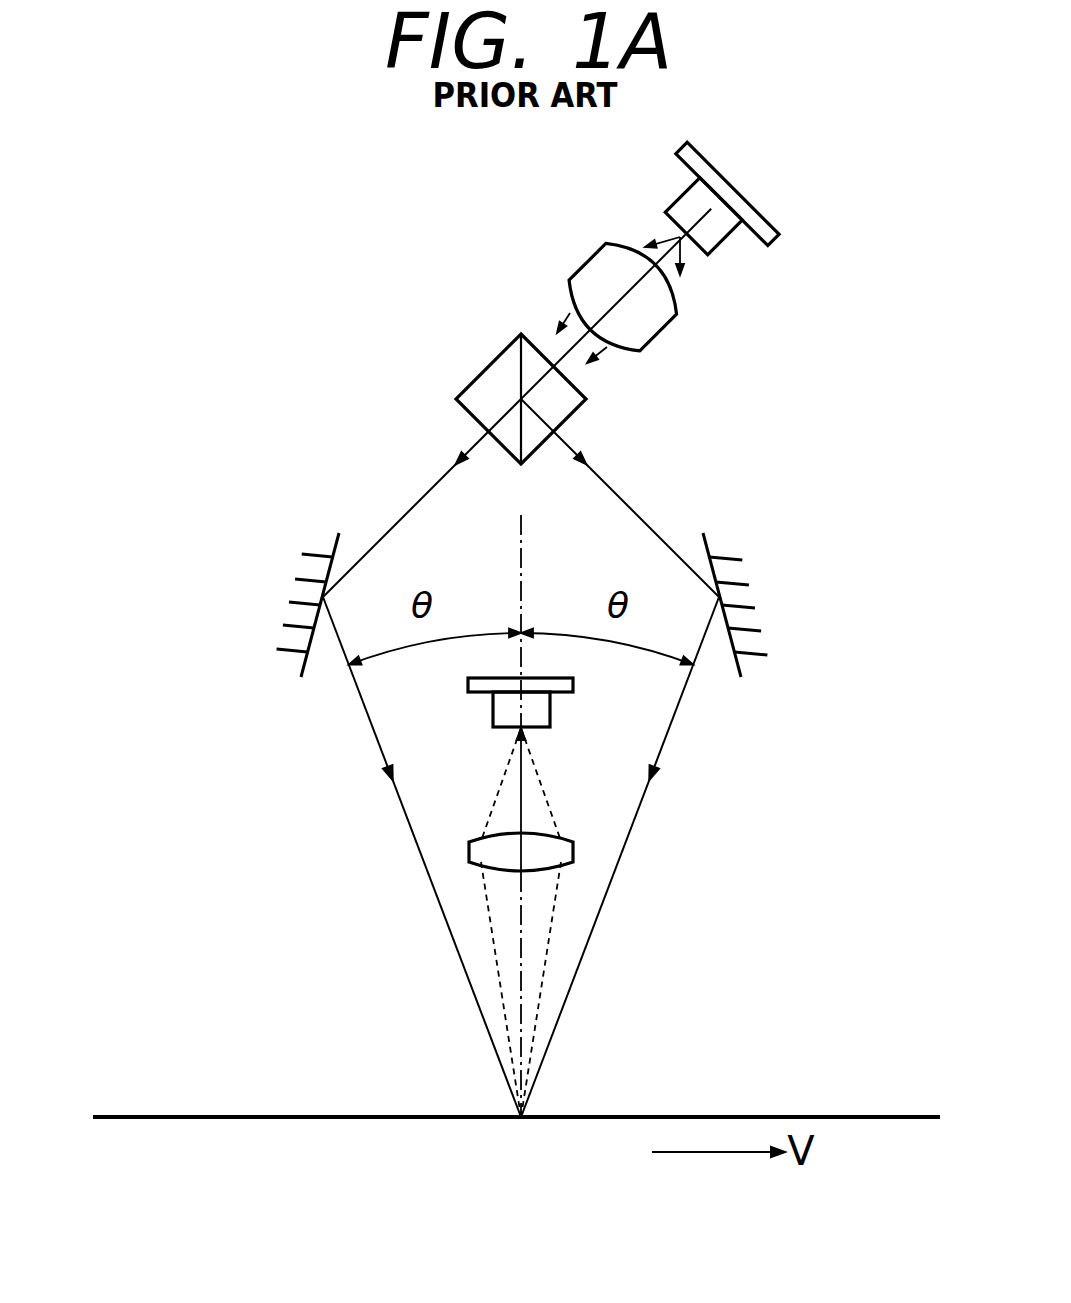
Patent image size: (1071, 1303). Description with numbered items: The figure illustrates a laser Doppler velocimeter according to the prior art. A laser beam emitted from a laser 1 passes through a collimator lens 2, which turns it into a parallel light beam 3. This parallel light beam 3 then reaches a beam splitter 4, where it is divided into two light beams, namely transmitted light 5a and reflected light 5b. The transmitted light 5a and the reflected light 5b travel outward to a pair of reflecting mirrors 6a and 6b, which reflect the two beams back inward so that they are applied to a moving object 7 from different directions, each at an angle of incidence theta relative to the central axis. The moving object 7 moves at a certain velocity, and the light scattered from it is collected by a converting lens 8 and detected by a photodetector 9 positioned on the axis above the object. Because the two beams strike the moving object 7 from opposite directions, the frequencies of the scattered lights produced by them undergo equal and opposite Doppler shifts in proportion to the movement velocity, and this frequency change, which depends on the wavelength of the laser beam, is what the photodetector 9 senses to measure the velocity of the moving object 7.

The laser 1 is at (675, 202).
The collimator lens 2 is at (580, 263).
The parallel light beam 3 is at (568, 316).
The beam splitter 4 is at (471, 384).
The transmitted light 5a is at (412, 508).
The reflected light 5b is at (624, 497).
The reflecting mirror 6a is at (332, 542).
The reflecting mirror 6b is at (707, 540).
The moving object 7 is at (245, 1117).
The converting lens 8 is at (563, 838).
The photodetector 9 is at (550, 710).